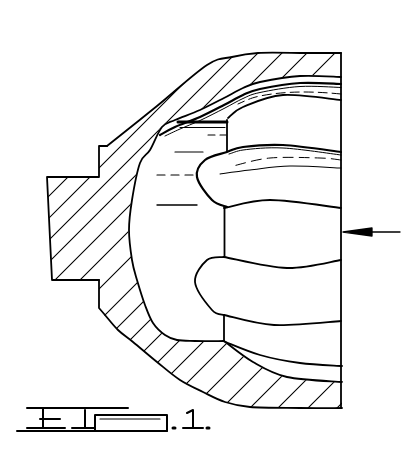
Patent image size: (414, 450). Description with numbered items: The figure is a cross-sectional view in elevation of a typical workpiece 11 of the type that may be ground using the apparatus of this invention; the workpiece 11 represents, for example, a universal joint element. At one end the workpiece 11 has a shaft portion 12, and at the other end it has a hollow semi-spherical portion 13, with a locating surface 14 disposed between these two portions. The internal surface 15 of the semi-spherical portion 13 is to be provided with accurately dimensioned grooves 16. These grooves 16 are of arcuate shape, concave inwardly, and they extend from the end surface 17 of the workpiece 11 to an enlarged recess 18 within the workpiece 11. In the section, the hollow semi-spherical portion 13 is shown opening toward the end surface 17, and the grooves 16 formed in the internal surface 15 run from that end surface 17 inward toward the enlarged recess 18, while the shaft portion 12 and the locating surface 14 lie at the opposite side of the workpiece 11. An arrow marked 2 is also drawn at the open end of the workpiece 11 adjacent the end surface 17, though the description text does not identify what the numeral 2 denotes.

The ball member insertion direction arrow 2 is at (371, 218).
The workpiece 11 is at (334, 53).
The shaft portion 12 is at (56, 178).
The hollow semi-spherical portion 13 is at (246, 35).
The locating surface 14 is at (102, 308).
The internal surface 15 is at (322, 132).
The grooves 16 is at (334, 97).
The end surface 17 is at (345, 72).
The enlarged recess 18 is at (155, 148).